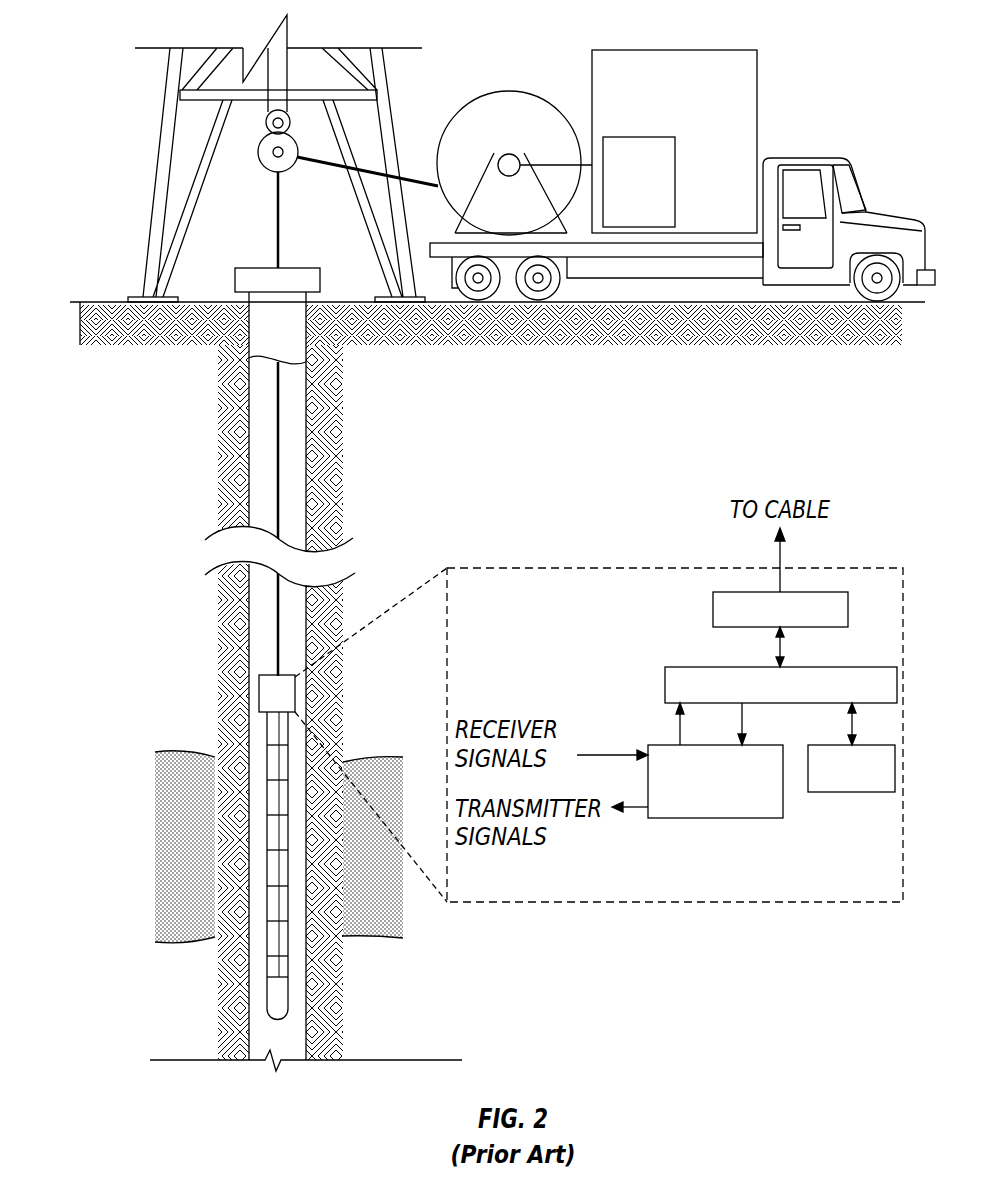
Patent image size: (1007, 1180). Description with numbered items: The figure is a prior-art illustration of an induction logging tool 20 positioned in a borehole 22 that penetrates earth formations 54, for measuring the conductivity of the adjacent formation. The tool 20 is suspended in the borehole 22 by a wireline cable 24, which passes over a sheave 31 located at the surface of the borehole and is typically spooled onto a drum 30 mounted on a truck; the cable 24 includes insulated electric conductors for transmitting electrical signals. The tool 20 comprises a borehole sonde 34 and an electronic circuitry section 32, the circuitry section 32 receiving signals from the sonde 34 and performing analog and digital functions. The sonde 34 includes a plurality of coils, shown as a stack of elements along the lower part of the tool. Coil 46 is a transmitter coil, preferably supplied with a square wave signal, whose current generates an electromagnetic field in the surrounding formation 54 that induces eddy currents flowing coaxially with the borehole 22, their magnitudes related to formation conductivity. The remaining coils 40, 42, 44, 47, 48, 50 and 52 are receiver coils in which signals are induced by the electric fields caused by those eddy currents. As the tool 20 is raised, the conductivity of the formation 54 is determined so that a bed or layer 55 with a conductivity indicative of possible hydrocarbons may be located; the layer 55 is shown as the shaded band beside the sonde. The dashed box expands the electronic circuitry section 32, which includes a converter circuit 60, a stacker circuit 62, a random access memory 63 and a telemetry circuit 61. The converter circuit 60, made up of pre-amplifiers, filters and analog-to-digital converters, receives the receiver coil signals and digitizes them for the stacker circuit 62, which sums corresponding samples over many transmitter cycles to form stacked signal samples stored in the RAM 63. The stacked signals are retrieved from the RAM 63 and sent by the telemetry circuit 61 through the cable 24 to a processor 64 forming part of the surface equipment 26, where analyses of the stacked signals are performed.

The induction logging tool 20 is at (280, 819).
The borehole 22 is at (267, 622).
The wireline cable 24 is at (279, 240).
The surface equipment 26 is at (740, 50).
The drum 30 is at (478, 98).
The sheave 31 is at (266, 170).
The electronic circuitry section 32 is at (288, 693).
The borehole sonde 34 is at (158, 742).
The receiver coil 40 is at (278, 745).
The receiver coil 42 is at (278, 780).
The receiver coil 44 is at (278, 815).
The transmitter coil 46 is at (278, 850).
The receiver coil 47 is at (278, 886).
The receiver coil 48 is at (278, 921).
The receiver coil 50 is at (278, 956).
The receiver coil 52 is at (278, 977).
The earth formation 54 is at (383, 607).
The bed or layer 55 is at (382, 882).
The converter circuit 60 is at (665, 818).
The telemetry circuit 61 is at (713, 610).
The stacker circuit 62 is at (712, 667).
The random access memory (RAM) 63 is at (862, 792).
The processor 64 is at (675, 157).